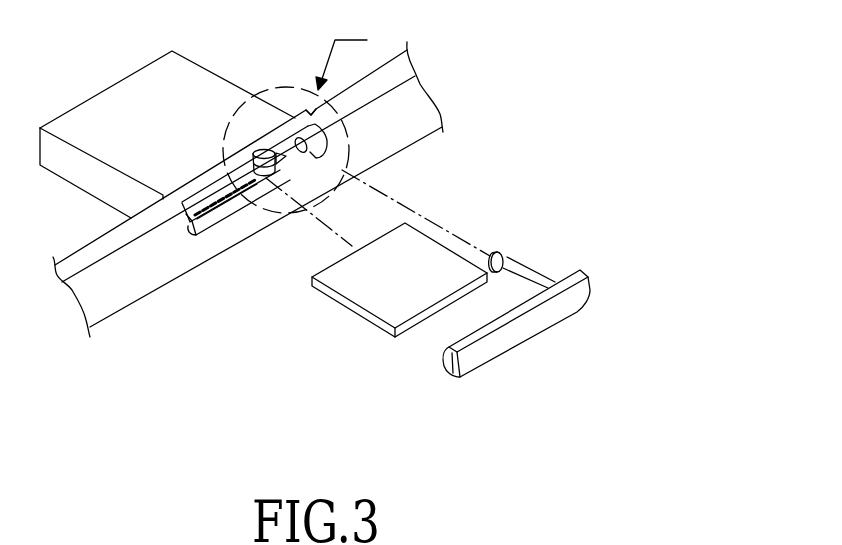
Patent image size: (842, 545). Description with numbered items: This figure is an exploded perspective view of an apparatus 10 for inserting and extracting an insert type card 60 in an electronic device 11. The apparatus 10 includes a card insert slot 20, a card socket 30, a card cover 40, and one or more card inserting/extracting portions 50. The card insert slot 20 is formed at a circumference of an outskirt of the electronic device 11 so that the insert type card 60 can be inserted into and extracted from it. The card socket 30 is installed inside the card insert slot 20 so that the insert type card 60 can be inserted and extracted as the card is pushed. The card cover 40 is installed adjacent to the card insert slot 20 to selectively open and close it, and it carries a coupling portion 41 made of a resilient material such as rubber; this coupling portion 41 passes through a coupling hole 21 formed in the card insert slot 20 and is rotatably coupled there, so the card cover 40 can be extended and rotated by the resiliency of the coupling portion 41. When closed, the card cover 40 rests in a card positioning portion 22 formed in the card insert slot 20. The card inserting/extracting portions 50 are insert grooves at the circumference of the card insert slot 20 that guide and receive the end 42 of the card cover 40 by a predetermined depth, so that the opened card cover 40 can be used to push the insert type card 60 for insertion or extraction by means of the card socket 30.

The apparatus for inserting/extracting an insert type card 10 is at (455, 20).
The electronic device 11 is at (128, 282).
The card insert slot 20 is at (369, 114).
The coupling hole 21 is at (304, 114).
The card positioning portion 22 is at (352, 138).
The card socket 30 is at (108, 100).
The card cover 40 is at (552, 332).
The coupling portion 41 is at (529, 277).
The end of the card cover 42 is at (578, 297).
The card inserting/extracting portion 50 is at (222, 190).
The insert type card 60 is at (375, 318).